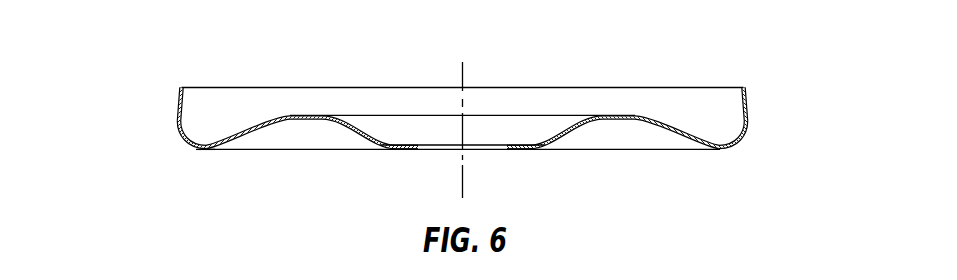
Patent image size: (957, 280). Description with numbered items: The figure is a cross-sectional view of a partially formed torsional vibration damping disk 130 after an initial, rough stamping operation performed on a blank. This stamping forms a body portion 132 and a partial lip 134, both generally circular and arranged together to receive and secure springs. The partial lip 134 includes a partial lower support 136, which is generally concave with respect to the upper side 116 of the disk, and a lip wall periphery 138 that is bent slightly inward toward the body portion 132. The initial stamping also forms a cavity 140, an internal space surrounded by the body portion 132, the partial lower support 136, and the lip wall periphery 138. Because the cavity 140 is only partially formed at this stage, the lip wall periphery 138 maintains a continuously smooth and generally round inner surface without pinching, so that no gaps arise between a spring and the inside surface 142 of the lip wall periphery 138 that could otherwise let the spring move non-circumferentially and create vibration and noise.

The upper side 116 is at (549, 88).
The disk 130 is at (302, 80).
The body portion 132 is at (336, 116).
The partial lip 134 is at (173, 153).
The partial lower support 136 is at (203, 150).
The lip wall periphery 138 is at (178, 88).
The cavity 140 is at (197, 123).
The inside surface 142 is at (742, 111).